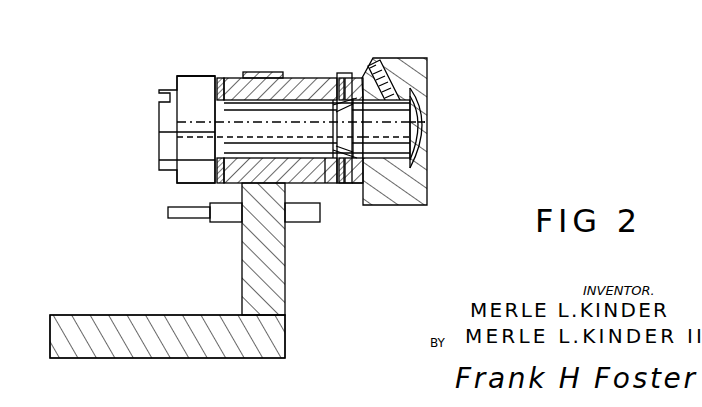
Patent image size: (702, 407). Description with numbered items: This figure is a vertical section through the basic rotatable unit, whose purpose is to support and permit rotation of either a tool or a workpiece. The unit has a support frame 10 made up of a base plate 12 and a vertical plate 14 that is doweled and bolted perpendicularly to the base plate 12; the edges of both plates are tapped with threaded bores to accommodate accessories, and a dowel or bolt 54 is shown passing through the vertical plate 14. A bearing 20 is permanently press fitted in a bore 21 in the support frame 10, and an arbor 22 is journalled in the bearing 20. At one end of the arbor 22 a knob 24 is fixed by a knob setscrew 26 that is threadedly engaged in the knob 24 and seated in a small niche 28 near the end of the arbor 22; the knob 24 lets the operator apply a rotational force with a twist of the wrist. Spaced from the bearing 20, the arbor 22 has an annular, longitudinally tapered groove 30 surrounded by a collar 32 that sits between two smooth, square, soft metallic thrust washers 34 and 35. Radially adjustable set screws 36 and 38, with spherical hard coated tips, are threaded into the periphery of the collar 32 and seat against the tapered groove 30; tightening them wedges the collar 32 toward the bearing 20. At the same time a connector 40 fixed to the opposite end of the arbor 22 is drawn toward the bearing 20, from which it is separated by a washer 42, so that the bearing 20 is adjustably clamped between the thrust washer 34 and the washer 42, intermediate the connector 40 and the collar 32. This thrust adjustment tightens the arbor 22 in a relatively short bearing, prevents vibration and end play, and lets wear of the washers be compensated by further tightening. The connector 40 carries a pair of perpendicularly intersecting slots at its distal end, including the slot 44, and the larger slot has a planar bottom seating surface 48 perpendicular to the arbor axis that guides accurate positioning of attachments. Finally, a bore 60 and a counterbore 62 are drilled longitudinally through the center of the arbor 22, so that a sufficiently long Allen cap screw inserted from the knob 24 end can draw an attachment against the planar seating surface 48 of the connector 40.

The support frame 10 is at (108, 313).
The base plate 12 is at (192, 352).
The vertical plate 14 is at (247, 265).
The bearing 20 is at (302, 78).
The bore 21 is at (250, 73).
The arbor 22 is at (265, 115).
The knob 24 is at (410, 63).
The knob setscrew 26 is at (372, 66).
The niche 28 is at (410, 112).
The tapered groove 30 is at (361, 74).
The collar 32 is at (334, 185).
The thrust washer 34 is at (325, 185).
The thrust washer 35 is at (353, 188).
The set screw 36 is at (340, 76).
The set screw 38 is at (343, 185).
The connector 40 is at (202, 85).
The washer 42 is at (220, 78).
The slot 44 is at (170, 97).
The planar bottom seating surface 48 is at (178, 80).
The pin 54 is at (230, 212).
The bore 60 is at (193, 138).
The counterbore 62 is at (405, 141).